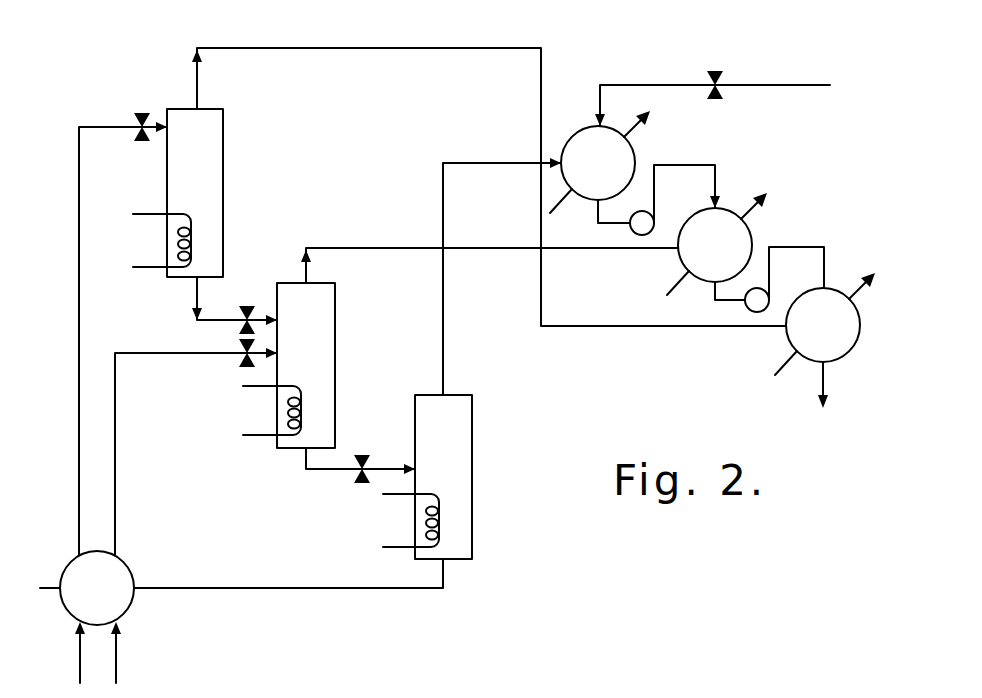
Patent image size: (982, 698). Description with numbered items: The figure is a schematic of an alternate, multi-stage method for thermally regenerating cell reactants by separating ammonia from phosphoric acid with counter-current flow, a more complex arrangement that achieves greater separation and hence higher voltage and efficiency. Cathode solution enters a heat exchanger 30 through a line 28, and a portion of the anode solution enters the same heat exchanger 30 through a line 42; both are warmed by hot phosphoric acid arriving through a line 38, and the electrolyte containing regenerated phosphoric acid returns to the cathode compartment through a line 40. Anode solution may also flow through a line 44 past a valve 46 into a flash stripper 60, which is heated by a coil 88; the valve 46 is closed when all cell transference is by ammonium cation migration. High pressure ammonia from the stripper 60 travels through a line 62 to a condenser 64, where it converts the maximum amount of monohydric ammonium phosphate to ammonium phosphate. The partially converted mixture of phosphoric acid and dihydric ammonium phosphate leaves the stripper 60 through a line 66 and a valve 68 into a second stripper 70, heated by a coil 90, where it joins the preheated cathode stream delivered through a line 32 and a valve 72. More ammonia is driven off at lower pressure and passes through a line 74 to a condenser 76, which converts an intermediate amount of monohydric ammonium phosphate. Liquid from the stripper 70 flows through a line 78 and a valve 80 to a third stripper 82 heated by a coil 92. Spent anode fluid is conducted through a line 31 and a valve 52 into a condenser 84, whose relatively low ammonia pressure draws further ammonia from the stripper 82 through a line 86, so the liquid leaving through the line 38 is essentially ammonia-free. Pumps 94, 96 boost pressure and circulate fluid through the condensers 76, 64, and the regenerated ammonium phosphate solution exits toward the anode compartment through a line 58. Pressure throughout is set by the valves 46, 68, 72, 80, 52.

The line 28 is at (117, 666).
The heat exchanger 30 is at (112, 605).
The line 31 is at (805, 84).
The line 32 is at (165, 352).
The line 38 is at (353, 590).
The line 40 is at (52, 586).
The line 42 is at (78, 666).
The line 44 is at (79, 208).
The valve 46 is at (140, 112).
The valve 52 is at (705, 72).
The line 58 is at (826, 381).
The flash stripper 60 is at (209, 165).
The line 62 is at (352, 47).
The condenser 64 is at (858, 334).
The line 66 is at (233, 323).
The valve 68 is at (247, 306).
The stripper 70 is at (319, 340).
The valve 72 is at (240, 365).
The line 74 is at (383, 248).
The condenser 76 is at (750, 228).
The line 78 is at (313, 472).
The valve 80 is at (363, 454).
The stripper 82 is at (457, 445).
The condenser 84 is at (630, 153).
The line 86 is at (443, 184).
The coil 88 is at (152, 212).
The coil 90 is at (260, 438).
The coil 92 is at (387, 546).
The pump 94 is at (652, 229).
The pump 96 is at (768, 306).